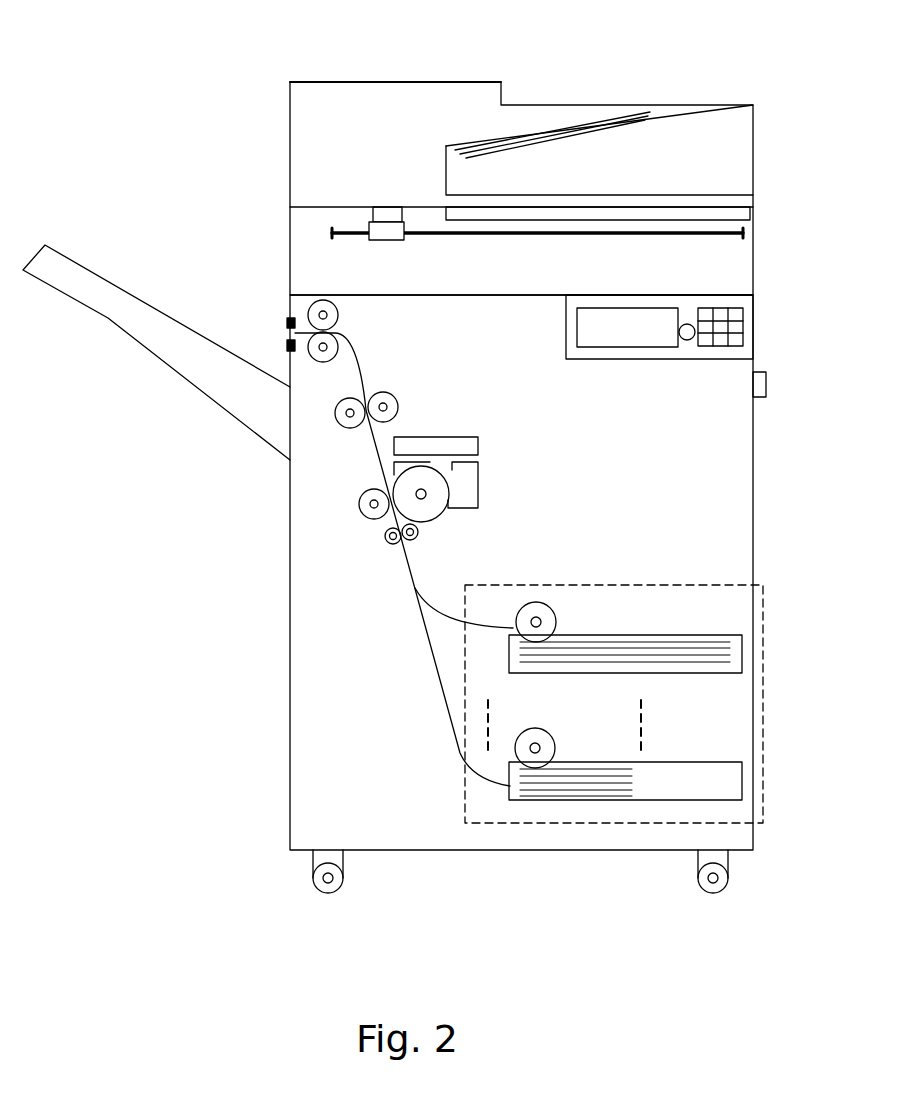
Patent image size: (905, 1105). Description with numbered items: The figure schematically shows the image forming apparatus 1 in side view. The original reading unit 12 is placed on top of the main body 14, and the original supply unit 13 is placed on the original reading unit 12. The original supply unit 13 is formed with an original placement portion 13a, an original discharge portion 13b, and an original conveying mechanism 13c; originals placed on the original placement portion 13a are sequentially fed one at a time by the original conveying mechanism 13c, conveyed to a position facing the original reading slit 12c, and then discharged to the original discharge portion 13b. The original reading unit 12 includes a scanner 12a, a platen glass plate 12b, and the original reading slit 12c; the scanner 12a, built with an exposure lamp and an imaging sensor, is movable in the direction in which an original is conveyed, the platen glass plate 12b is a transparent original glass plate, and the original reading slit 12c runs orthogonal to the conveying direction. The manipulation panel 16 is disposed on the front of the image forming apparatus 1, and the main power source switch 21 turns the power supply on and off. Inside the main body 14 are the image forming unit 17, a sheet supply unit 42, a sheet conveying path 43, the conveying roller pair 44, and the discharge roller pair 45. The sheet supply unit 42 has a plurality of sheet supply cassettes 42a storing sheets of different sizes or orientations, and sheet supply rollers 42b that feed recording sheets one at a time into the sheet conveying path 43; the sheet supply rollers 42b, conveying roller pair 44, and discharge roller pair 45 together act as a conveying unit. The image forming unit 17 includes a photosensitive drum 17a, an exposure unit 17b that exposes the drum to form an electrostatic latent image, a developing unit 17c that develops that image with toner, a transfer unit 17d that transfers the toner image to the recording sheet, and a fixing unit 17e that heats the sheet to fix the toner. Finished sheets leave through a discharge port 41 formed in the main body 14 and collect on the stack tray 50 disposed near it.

The image forming apparatus 1 is at (218, 108).
The original reading unit 12 is at (278, 243).
The scanner 12a is at (392, 243).
The platen glass plate 12b is at (735, 215).
The original reading slit 12c is at (390, 212).
The original supply unit 13 is at (278, 146).
The original placement portion 13a is at (658, 124).
The original discharge portion 13b is at (625, 195).
The original conveying mechanism 13c is at (398, 88).
The main body 14 is at (754, 545).
The manipulation panel 16 is at (752, 345).
The image forming unit 17 is at (572, 462).
The photosensitive drum 17a is at (433, 520).
The exposure unit 17b is at (479, 443).
The developing unit 17c is at (479, 478).
The transfer unit 17d is at (358, 502).
The fixing unit 17e is at (398, 405).
The main power source switch 21 is at (765, 396).
The discharge port 41 is at (287, 333).
The sheet supply unit 42 is at (765, 634).
The sheet supply cassette 42a is at (675, 635).
The sheet supply roller 42b is at (557, 627).
The sheet conveying path 43 is at (400, 548).
The conveying roller pair 44 is at (384, 538).
The discharge roller pair 45 is at (338, 314).
The stack tray 50 is at (176, 376).